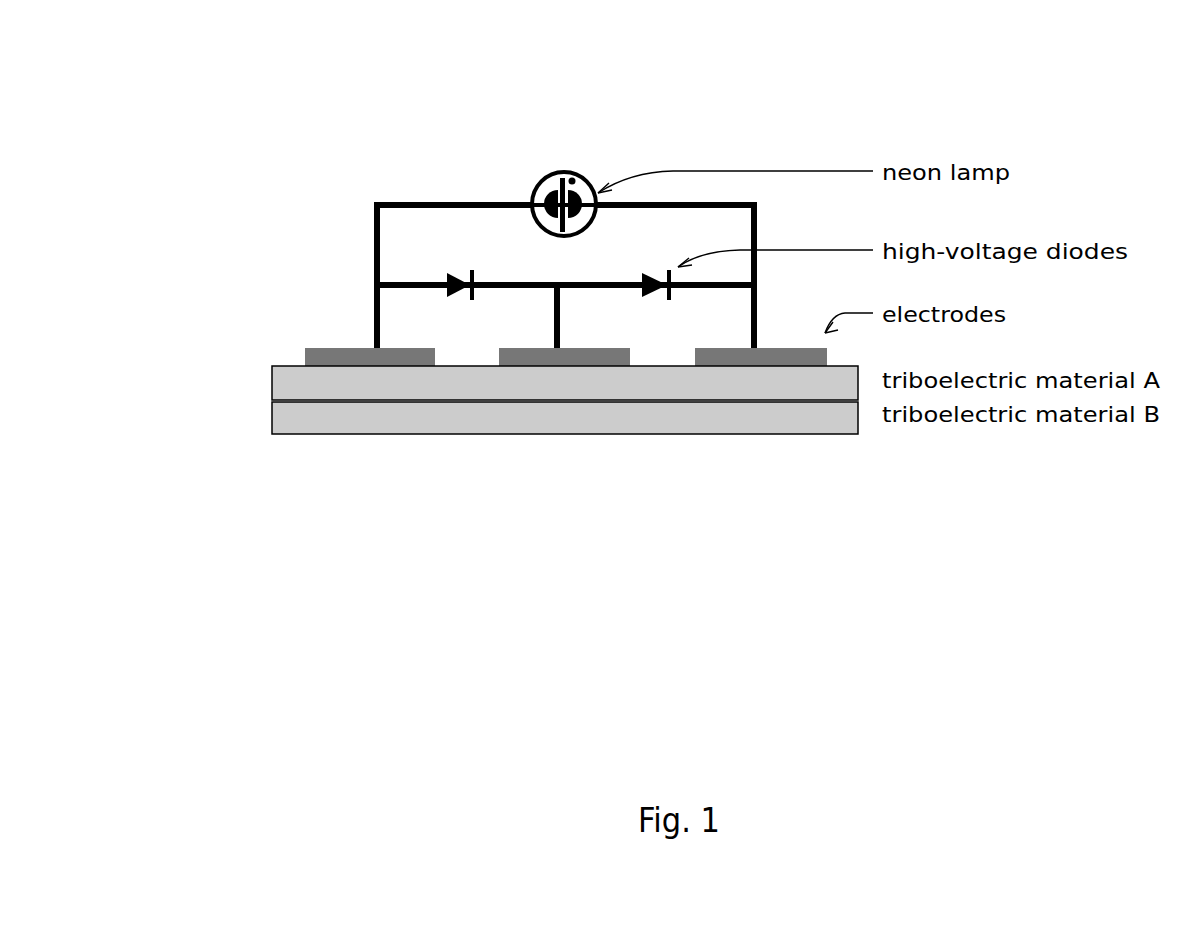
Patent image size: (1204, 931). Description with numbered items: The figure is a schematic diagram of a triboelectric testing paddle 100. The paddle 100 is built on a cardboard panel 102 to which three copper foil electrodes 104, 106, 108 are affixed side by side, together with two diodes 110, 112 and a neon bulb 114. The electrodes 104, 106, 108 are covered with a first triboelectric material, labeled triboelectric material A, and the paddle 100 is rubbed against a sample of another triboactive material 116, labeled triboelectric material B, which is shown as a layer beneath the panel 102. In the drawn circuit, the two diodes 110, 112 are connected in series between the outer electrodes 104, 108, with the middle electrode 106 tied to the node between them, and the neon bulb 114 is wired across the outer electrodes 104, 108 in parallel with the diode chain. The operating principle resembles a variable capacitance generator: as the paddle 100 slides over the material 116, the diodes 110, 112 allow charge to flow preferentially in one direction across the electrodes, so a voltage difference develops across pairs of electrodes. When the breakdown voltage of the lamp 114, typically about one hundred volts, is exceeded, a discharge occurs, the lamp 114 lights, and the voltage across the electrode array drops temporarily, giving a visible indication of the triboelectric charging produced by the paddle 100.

The triboelectric testing paddle 100 is at (310, 126).
The cardboard panel 102 is at (565, 383).
The copper foil electrode 104 is at (370, 342).
The copper foil electrode 106 is at (564, 342).
The copper foil electrode 108 is at (761, 342).
The diode 110 is at (458, 269).
The diode 112 is at (649, 269).
The neon bulb 114 is at (564, 187).
The triboactive material 116 is at (565, 418).